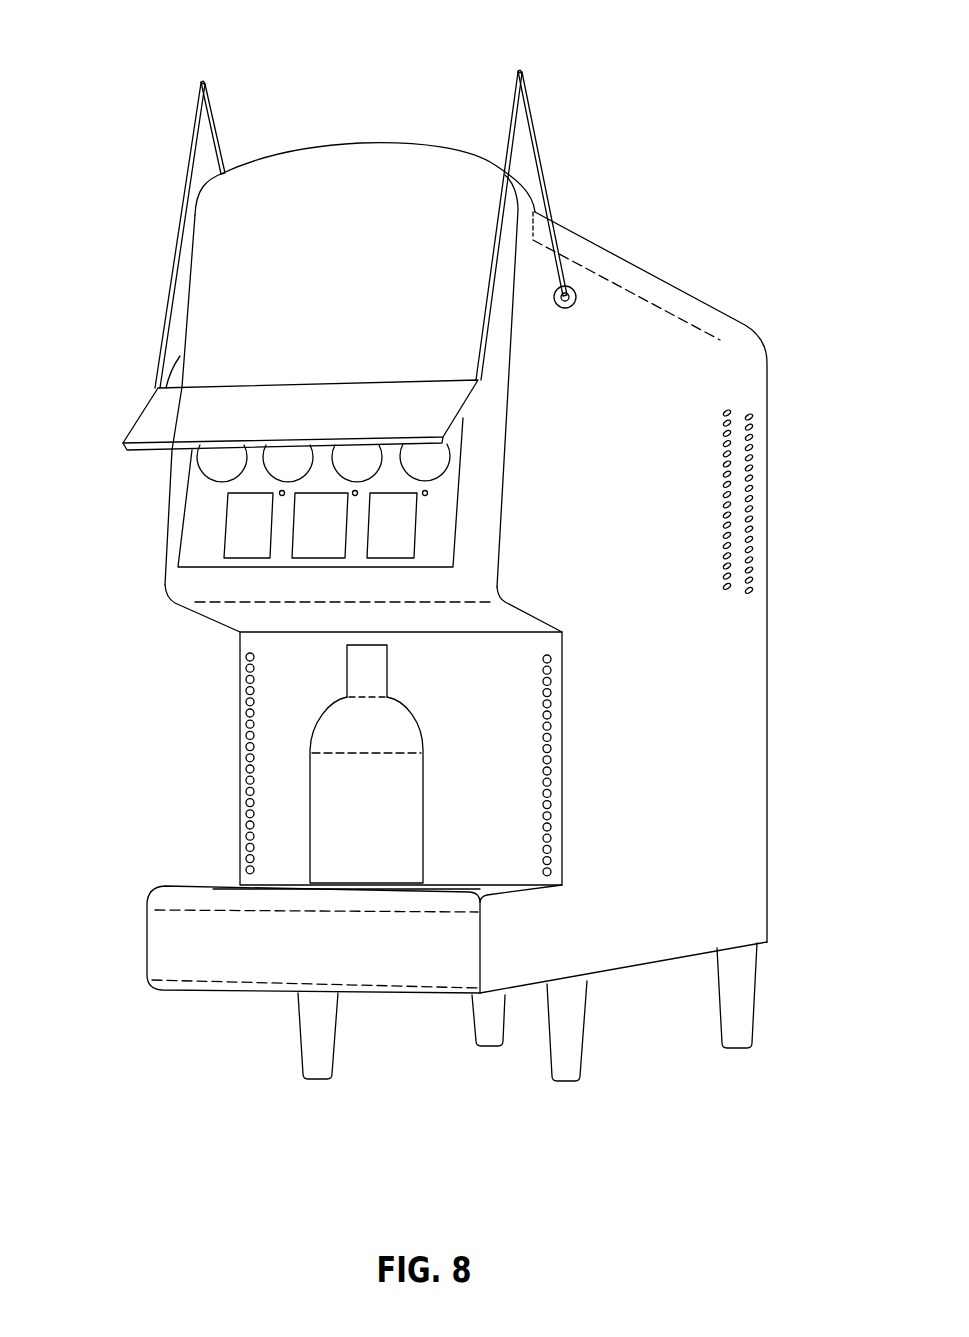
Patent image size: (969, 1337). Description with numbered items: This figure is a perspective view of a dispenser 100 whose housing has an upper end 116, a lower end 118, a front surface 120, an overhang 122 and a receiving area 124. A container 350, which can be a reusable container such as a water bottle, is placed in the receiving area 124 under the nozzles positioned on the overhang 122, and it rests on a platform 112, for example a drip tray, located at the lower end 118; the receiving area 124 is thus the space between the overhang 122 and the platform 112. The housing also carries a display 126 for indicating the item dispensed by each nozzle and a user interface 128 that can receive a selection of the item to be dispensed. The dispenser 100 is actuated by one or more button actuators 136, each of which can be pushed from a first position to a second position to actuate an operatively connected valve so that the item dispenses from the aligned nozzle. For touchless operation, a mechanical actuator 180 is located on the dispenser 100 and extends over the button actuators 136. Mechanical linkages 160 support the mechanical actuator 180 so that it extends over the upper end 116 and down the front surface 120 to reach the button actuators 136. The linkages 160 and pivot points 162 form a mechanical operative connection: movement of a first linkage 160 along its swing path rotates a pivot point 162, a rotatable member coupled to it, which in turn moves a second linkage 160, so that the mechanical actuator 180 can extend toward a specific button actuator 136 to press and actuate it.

The dispenser 100 is at (678, 173).
The platform 112 is at (237, 877).
The upper end 116 is at (358, 142).
The lower end 118 is at (420, 995).
The front surface 120 is at (471, 790).
The overhang 122 is at (523, 612).
The receiving area 124 is at (345, 758).
The display 126 is at (403, 520).
The user interface 128 is at (316, 499).
The button actuator 136 is at (210, 462).
The mechanical linkage 160 is at (217, 127).
The pivot point 162 is at (201, 82).
The mechanical actuator 180 is at (163, 413).
The container 350 is at (330, 810).